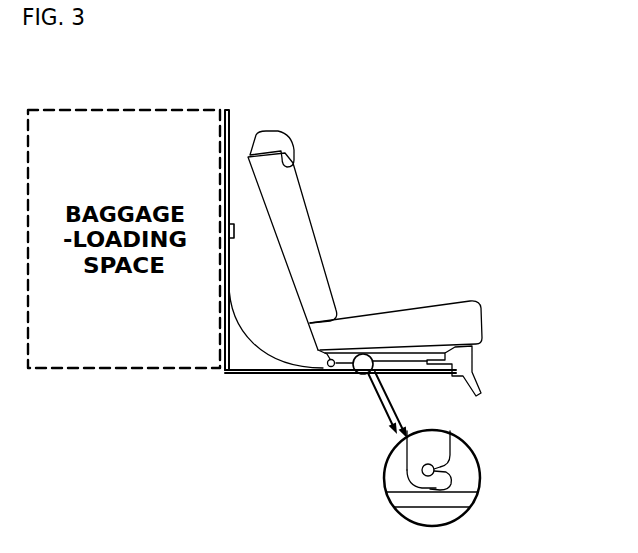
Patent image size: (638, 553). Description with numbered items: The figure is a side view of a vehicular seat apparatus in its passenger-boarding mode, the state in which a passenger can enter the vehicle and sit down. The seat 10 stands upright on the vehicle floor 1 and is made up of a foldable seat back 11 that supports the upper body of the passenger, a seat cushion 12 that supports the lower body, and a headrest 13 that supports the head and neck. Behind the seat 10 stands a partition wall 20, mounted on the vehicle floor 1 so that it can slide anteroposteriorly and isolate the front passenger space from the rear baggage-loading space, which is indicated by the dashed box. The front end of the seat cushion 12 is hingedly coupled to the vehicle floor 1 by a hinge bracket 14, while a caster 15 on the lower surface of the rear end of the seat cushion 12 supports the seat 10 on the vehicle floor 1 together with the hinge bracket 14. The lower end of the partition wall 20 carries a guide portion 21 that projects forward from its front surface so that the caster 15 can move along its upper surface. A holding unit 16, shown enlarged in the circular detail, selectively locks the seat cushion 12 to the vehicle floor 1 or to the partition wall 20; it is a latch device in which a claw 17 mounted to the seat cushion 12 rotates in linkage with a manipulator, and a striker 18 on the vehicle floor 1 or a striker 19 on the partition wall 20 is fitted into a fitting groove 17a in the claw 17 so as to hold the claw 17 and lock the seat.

The vehicle floor 1 is at (271, 364).
The seat 10 is at (350, 235).
The seat back 11 is at (293, 203).
The seat cushion 12 is at (451, 309).
The headrest 13 is at (277, 132).
The hinge bracket 14 is at (465, 360).
The caster 15 is at (321, 367).
The holding unit 16 is at (458, 470).
The claw 17 is at (405, 470).
The fitting groove 17a is at (421, 486).
The striker 18 is at (456, 458).
The striker 19 is at (228, 224).
The partition wall 20 is at (232, 128).
The guide portion 21 is at (253, 326).